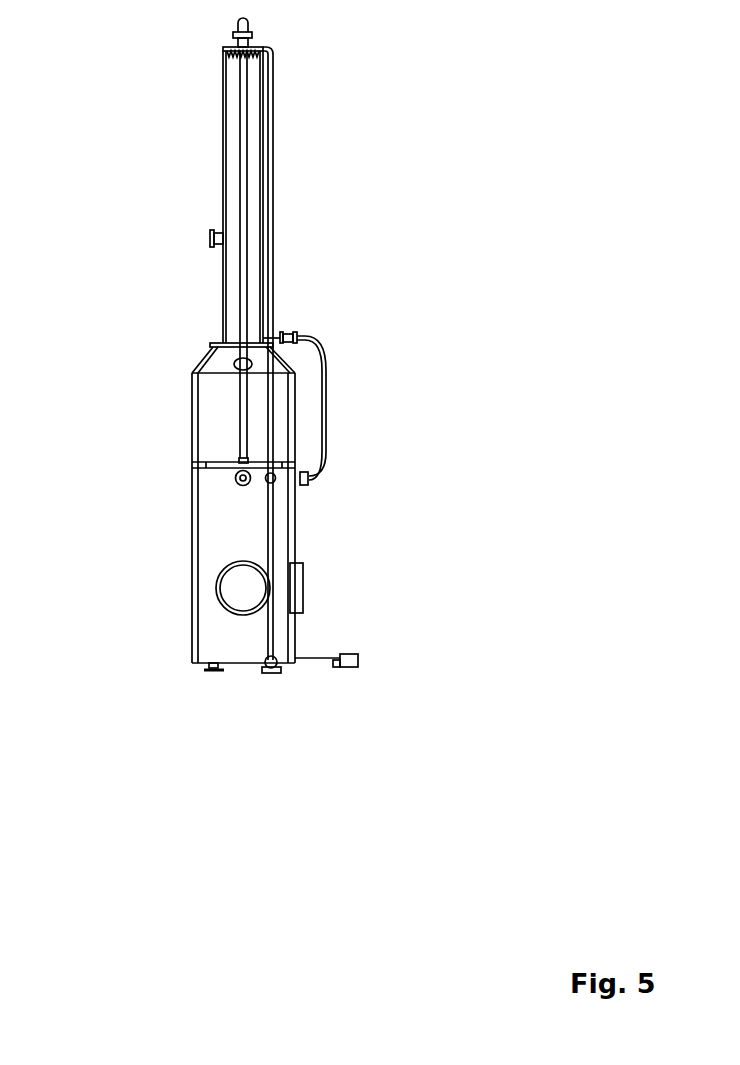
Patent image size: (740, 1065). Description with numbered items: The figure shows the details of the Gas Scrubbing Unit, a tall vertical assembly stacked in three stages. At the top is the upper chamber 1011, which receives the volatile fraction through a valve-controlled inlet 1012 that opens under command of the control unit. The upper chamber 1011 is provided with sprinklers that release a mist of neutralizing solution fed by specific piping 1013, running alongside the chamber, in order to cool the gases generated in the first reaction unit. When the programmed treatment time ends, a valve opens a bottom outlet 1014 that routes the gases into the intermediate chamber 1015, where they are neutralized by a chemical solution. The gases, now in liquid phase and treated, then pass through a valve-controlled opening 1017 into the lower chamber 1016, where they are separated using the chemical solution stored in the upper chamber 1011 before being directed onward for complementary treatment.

The upper chamber 1011 is at (223, 172).
The valve-controlled inlet 1012 is at (233, 38).
The specific piping 1013 is at (273, 125).
The bottom outlet 1014 is at (234, 363).
The intermediate chamber 1015 is at (212, 427).
The lower chamber 1016 is at (213, 543).
The valve-controlled opening 1017 is at (235, 478).